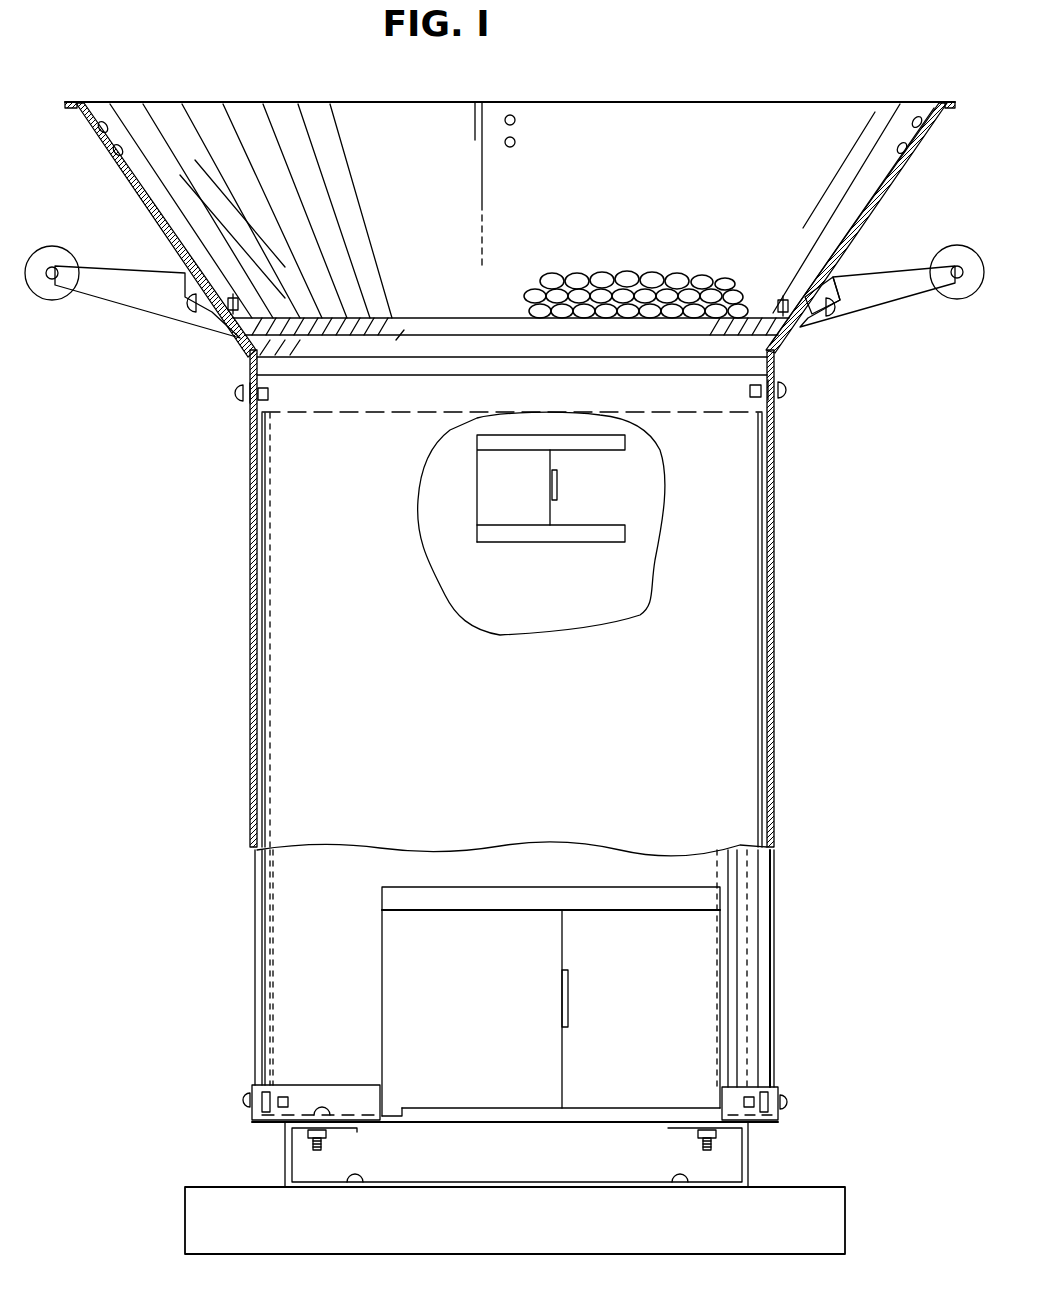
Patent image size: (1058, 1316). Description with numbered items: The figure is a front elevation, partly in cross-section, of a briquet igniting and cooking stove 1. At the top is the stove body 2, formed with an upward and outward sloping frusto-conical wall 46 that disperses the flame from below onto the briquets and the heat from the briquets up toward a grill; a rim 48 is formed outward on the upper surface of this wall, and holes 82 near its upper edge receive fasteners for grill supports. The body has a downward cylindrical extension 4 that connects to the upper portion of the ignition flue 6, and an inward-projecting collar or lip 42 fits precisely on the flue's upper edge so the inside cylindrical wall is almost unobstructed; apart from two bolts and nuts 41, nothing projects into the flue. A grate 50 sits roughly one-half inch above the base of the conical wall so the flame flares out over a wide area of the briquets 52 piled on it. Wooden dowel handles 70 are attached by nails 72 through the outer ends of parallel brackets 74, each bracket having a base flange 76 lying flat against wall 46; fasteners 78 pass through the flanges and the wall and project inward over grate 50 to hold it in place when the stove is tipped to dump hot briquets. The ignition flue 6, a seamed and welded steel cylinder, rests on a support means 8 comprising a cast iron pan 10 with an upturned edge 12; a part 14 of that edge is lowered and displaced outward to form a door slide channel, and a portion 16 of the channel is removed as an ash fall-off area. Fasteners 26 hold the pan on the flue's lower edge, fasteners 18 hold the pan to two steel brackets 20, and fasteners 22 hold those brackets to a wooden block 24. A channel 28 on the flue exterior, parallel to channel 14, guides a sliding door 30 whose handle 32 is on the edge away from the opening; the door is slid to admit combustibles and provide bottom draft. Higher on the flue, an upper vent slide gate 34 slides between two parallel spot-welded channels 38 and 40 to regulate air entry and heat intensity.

The briquet igniting and cooking stove 1 is at (800, 548).
The stove body 2 is at (513, 205).
The downward cylindrical extension 4 is at (778, 408).
The ignition flue 6 is at (775, 645).
The support means 8 is at (754, 1165).
The cast iron pan 10 is at (760, 1098).
The upturned edge 12 is at (728, 1097).
The door slide channel 14 is at (636, 1116).
The ash fall-off area 16 is at (391, 1120).
The fasteners 18 is at (326, 1131).
The steel brackets 20 is at (285, 1163).
The fasteners 22 is at (376, 1170).
The wooden block 24 is at (190, 1203).
The fasteners 26 is at (246, 1100).
The channel 28 is at (630, 900).
The sliding door 30 is at (395, 955).
The handle 32 is at (570, 985).
The upper vent slide gate 34 is at (497, 487).
The channel 38 is at (578, 532).
The channel 40 is at (594, 437).
The bolts and nuts 41 is at (240, 392).
The inward-projecting collar or lip 42 is at (746, 374).
The frusto-conical wall 46 is at (922, 141).
The rim 48 is at (947, 100).
The grate 50 is at (495, 318).
The briquets 52 is at (688, 270).
The wooden dowel handles 70 is at (866, 282).
The nails 72 is at (950, 269).
The brackets 74 is at (877, 296).
The base flange 76 is at (803, 325).
The fasteners 78 is at (792, 298).
The holes 82 is at (511, 116).